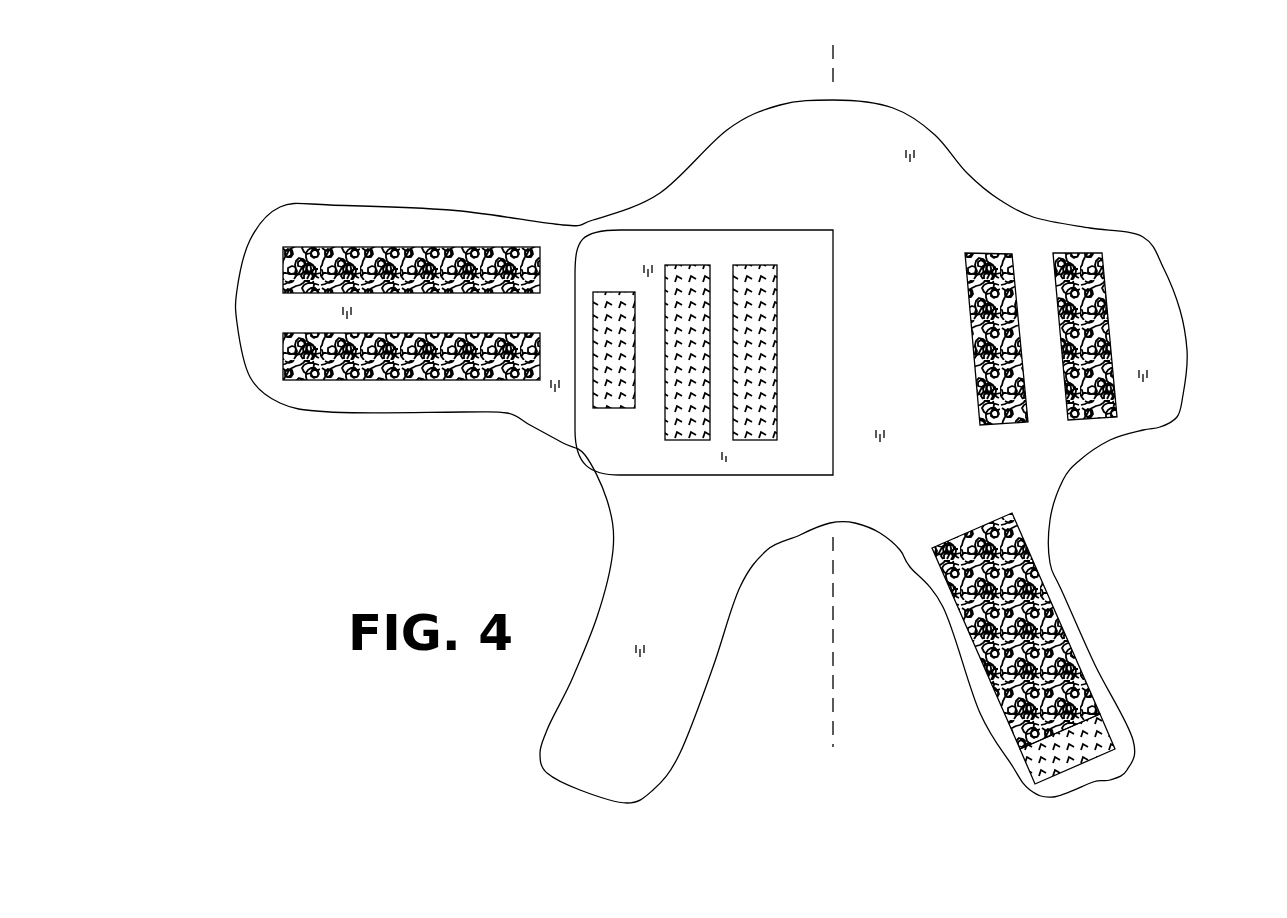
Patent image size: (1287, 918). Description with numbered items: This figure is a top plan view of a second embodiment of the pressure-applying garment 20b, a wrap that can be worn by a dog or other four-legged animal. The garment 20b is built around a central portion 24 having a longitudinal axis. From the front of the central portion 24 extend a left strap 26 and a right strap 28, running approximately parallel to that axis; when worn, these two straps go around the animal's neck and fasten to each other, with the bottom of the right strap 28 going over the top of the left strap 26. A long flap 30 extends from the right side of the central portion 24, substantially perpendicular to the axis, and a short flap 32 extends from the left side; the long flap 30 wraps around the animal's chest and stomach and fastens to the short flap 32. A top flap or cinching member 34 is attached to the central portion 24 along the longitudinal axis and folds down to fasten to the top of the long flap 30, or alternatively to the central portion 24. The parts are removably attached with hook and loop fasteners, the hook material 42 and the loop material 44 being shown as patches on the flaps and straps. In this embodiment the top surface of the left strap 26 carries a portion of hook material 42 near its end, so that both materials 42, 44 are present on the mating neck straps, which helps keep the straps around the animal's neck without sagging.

The pressure-applying garment 20b is at (1045, 167).
The central portion 24 is at (963, 172).
The left strap 26 is at (1108, 778).
The right strap 28 is at (560, 722).
The long flap 30 is at (437, 222).
The short flap 32 is at (1172, 337).
The cinching member 34 is at (765, 240).
The hook material 42 is at (690, 268).
The loop material 44 is at (334, 266).